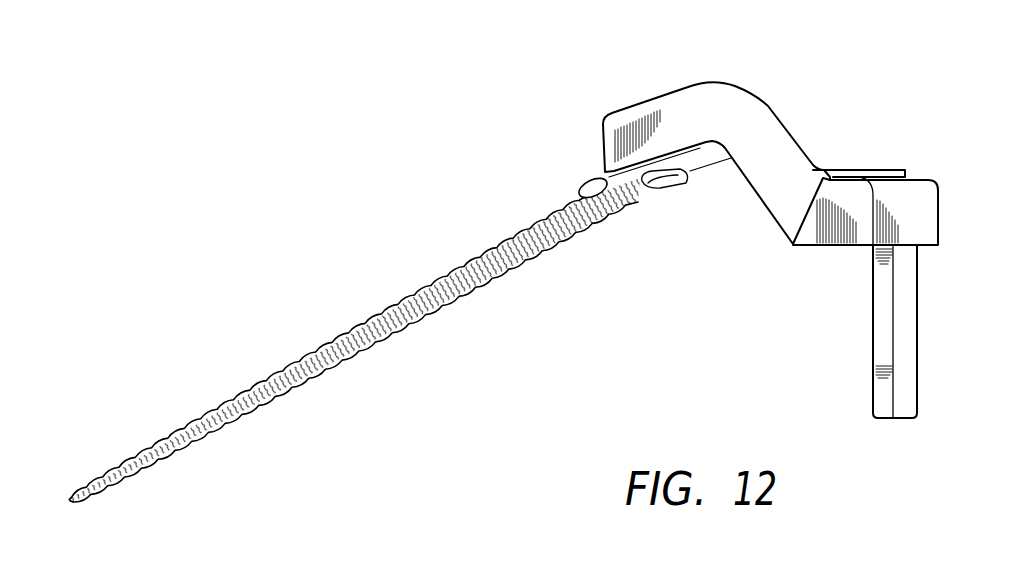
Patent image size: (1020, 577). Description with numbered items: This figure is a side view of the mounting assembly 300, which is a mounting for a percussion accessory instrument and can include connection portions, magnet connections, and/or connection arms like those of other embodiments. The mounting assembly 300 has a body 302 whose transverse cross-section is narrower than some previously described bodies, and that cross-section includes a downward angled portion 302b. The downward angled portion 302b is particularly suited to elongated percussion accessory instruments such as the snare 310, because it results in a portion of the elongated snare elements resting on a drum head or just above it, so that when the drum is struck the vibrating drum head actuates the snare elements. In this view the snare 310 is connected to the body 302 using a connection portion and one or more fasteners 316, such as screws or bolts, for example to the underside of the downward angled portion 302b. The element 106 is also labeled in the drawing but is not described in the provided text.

The mounting assembly 300 is at (266, 271).
The body 302 is at (742, 82).
The downward angled portion 302b is at (605, 143).
The snare 310 is at (350, 368).
The fastener 316 is at (665, 180).
The rail 106 is at (836, 170).